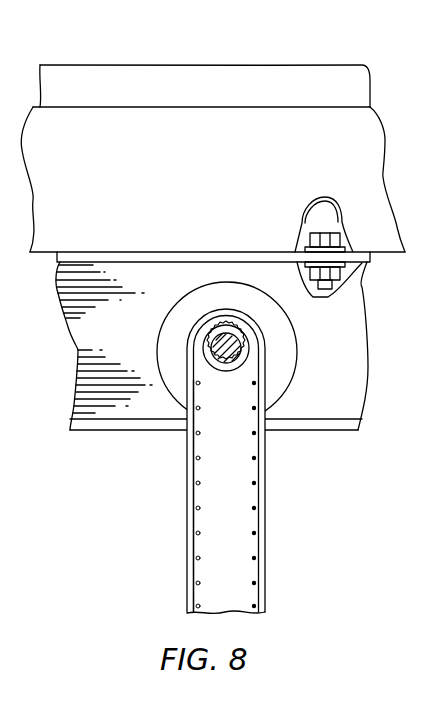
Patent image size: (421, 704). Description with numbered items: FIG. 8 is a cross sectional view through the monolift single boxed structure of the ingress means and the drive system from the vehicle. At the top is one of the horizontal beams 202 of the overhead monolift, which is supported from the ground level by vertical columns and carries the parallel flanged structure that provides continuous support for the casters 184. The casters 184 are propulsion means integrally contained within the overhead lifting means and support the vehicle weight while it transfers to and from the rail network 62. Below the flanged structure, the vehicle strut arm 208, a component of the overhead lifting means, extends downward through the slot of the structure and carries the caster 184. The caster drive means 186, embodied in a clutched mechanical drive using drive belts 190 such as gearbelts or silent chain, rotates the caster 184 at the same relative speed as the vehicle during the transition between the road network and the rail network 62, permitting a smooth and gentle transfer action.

The horizontal beams 202 is at (208, 68).
The rail network 62 is at (78, 352).
The casters 184 is at (172, 400).
The caster drive means 186 is at (265, 530).
The drive belts 190 is at (193, 545).
The vehicle strut arm 208 is at (230, 597).